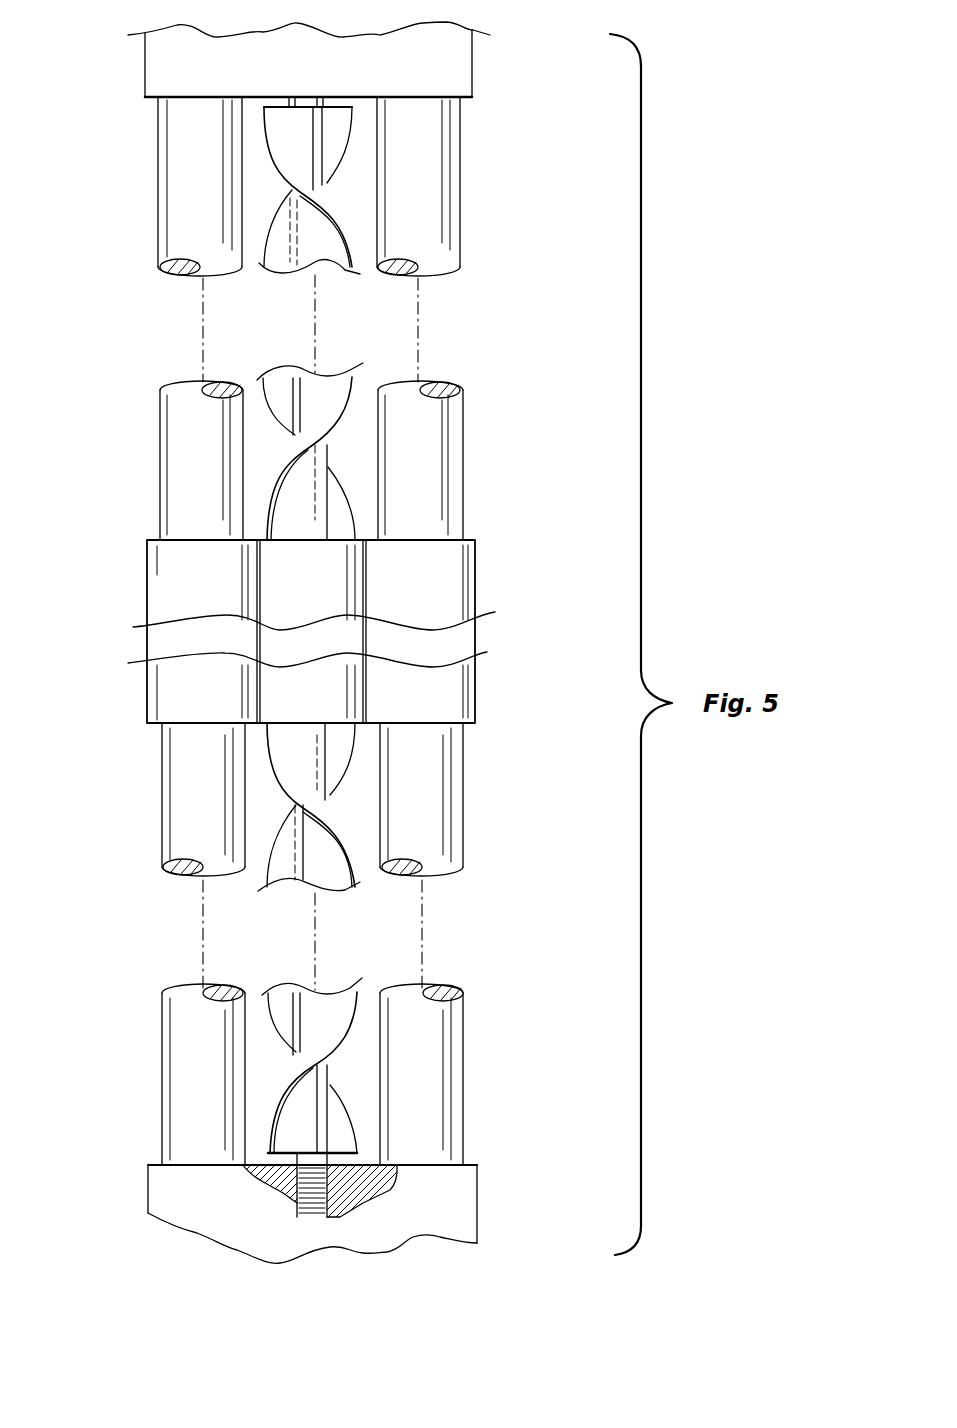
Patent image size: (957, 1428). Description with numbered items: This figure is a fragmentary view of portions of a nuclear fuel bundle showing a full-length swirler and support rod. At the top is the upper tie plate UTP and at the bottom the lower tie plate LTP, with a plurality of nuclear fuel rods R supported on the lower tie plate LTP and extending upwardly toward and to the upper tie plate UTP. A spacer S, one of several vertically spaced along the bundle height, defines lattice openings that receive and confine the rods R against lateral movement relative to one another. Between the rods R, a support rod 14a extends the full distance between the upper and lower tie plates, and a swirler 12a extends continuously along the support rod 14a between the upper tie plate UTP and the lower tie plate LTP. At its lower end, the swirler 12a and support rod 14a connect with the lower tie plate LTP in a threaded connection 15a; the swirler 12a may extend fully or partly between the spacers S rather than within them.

The upper tie plate UTP is at (147, 73).
The lower tie plate LTP is at (147, 1188).
The spacer S is at (143, 585).
The nuclear fuel rod R is at (158, 178).
The swirler 12a is at (337, 397).
The support rod 14a is at (355, 98).
The threaded connection 15a is at (317, 1193).